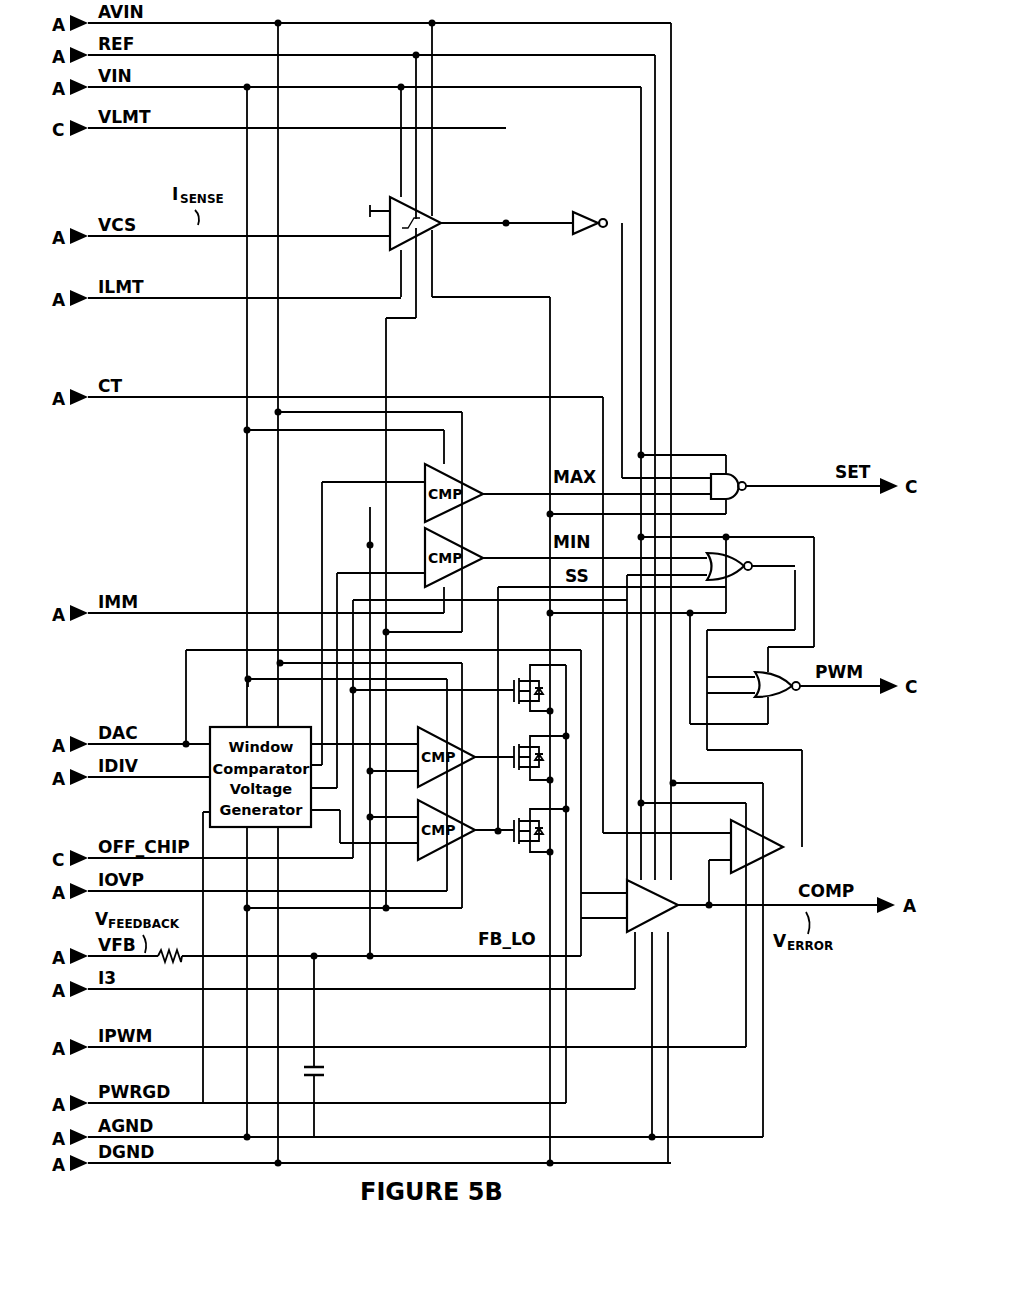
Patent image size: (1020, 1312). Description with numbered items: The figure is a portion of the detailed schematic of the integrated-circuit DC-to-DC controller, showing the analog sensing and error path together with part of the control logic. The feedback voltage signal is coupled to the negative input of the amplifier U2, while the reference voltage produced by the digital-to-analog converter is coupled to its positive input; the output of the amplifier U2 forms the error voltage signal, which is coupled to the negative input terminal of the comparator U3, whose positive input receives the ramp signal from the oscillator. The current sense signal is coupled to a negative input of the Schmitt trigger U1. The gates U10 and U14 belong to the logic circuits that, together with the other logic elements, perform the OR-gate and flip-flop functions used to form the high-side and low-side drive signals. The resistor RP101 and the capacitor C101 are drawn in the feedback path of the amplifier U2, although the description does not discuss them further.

The Schmitt trigger U1 is at (440, 212).
The amplifier U2 is at (670, 912).
The comparator U3 is at (773, 852).
The logic circuit element U10 is at (783, 700).
The logic circuit element U14 is at (738, 470).
The feedback resistor RP101 is at (170, 966).
The compensation capacitor C101 is at (342, 1074).